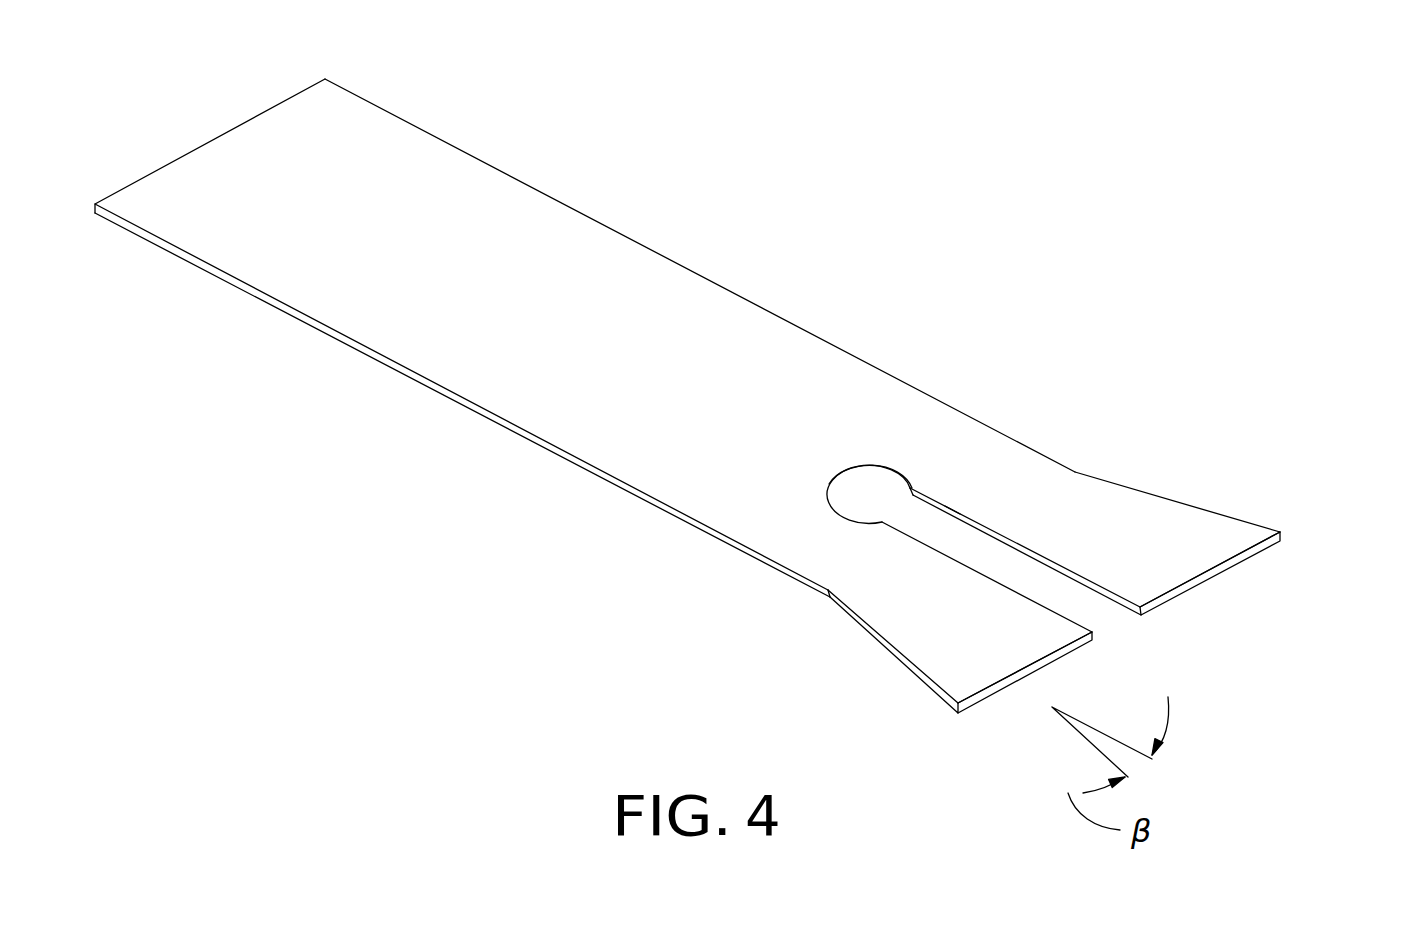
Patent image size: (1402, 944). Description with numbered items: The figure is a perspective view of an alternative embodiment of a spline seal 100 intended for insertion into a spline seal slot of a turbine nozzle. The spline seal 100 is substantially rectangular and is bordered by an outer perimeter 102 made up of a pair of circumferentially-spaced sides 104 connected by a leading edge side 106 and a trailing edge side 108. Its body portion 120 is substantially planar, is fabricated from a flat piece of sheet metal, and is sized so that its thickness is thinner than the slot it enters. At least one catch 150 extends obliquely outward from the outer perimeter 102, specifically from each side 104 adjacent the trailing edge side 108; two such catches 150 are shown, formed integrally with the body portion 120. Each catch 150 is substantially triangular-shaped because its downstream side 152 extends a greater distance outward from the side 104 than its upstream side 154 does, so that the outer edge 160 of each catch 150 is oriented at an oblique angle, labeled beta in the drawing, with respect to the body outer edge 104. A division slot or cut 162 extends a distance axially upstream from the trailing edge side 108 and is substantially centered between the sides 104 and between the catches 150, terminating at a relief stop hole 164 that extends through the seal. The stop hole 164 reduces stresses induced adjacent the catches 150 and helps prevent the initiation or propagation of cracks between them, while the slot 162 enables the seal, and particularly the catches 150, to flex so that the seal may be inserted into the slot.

The spline seal 100 is at (885, 82).
The outer perimeter 102 is at (498, 165).
The circumferentially-spaced sides 104 is at (547, 447).
The leading edge side 106 is at (275, 103).
The trailing edge side 108 is at (1182, 595).
The body portion 120 is at (447, 335).
The catch 150 is at (958, 667).
The downstream side 152 is at (1260, 528).
The upstream side 154 is at (1077, 478).
The outer edge 160 is at (880, 636).
The division slot 162 is at (973, 520).
The relief stop hole 164 is at (887, 458).